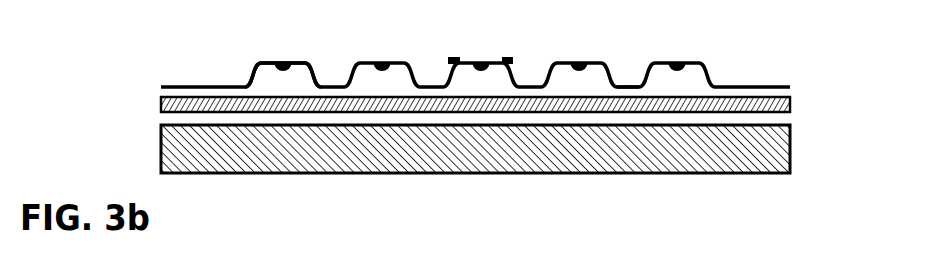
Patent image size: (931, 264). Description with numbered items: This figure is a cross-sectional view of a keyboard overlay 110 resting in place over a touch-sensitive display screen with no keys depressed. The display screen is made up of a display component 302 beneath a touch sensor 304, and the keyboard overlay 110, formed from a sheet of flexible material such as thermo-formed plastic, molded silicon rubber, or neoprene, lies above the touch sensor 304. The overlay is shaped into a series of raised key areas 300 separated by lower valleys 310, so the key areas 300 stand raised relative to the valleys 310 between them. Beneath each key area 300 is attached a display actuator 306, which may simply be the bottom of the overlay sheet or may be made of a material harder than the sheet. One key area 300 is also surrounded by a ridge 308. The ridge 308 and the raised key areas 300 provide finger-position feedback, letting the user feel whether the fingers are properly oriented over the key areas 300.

The keyboard overlay 110 is at (200, 86).
The key area 300 is at (268, 62).
The display actuator 306 is at (291, 76).
The ridge 308 is at (504, 58).
The valleys 310 is at (625, 86).
The touch sensor 304 is at (160, 107).
The display component 302 is at (160, 168).